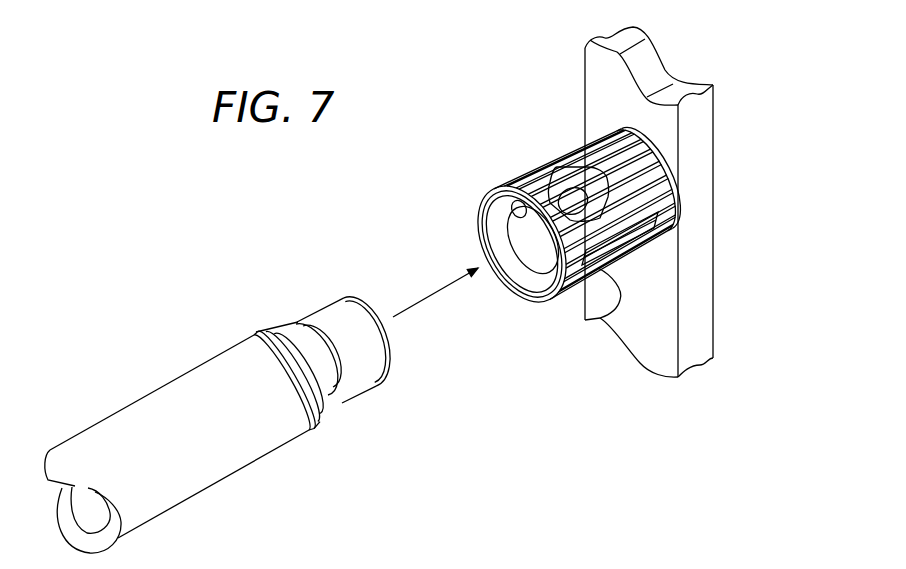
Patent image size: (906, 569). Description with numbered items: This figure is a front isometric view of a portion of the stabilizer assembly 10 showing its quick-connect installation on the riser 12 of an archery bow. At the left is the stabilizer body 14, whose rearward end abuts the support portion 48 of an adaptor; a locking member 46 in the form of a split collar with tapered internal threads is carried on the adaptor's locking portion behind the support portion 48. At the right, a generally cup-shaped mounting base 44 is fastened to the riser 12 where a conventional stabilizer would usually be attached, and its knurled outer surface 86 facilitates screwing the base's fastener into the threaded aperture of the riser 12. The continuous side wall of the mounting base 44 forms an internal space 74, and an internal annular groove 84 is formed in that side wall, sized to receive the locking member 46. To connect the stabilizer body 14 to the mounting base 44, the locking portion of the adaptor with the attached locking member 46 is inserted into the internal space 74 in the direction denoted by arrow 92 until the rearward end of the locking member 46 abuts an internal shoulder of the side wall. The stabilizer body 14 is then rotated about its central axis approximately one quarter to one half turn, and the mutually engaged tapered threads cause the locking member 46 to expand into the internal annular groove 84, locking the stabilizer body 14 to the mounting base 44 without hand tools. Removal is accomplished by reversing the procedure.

The stabilizer assembly 10 is at (217, 373).
The riser 12 is at (703, 182).
The stabilizer body 14 is at (140, 390).
The mounting base 44 is at (603, 318).
The locking member 46 is at (320, 312).
The support portion 48 is at (273, 330).
The internal space 74 is at (532, 270).
The internal annular groove 84 is at (560, 229).
The knurled outer surface 86 is at (517, 173).
The arrow 92 is at (420, 296).